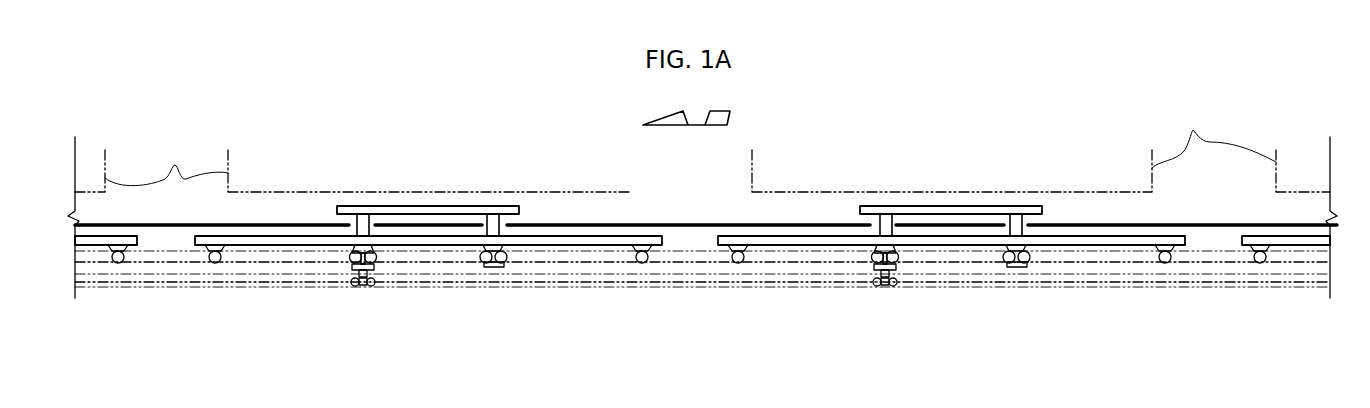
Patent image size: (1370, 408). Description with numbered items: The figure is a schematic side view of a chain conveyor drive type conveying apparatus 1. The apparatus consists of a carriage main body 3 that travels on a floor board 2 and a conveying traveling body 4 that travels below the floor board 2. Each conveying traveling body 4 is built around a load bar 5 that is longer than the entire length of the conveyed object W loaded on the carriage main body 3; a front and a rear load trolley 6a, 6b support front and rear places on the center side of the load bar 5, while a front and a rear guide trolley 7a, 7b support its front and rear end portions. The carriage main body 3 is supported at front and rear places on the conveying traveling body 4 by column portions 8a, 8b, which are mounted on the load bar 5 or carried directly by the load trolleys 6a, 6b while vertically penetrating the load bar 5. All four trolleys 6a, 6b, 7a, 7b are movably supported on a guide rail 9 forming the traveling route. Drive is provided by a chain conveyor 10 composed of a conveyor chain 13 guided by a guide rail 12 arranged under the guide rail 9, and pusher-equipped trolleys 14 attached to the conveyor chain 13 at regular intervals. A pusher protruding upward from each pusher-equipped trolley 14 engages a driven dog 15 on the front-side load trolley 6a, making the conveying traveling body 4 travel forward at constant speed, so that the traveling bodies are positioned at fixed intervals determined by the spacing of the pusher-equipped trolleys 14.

The conveying apparatus 1 is at (705, 176).
The floor board 2 is at (690, 223).
The carriage main body 3 is at (423, 207).
The conveying traveling body 4 is at (272, 228).
The load bar 5 is at (568, 237).
The front load trolley 6a is at (350, 257).
The rear load trolley 6b is at (495, 268).
The front guide trolley 7a is at (215, 264).
The rear guide trolley 7b is at (118, 264).
The front column portion 8a is at (362, 222).
The rear column portion 8b is at (780, 192).
The guide rail 9 is at (255, 263).
The chain conveyor 10 is at (412, 291).
The guide rail 12 is at (152, 288).
The conveyor chain 13 is at (565, 283).
The pusher-equipped trolley 14 is at (361, 286).
The driven dog 15 is at (352, 271).
The conveyed object W is at (702, 147).